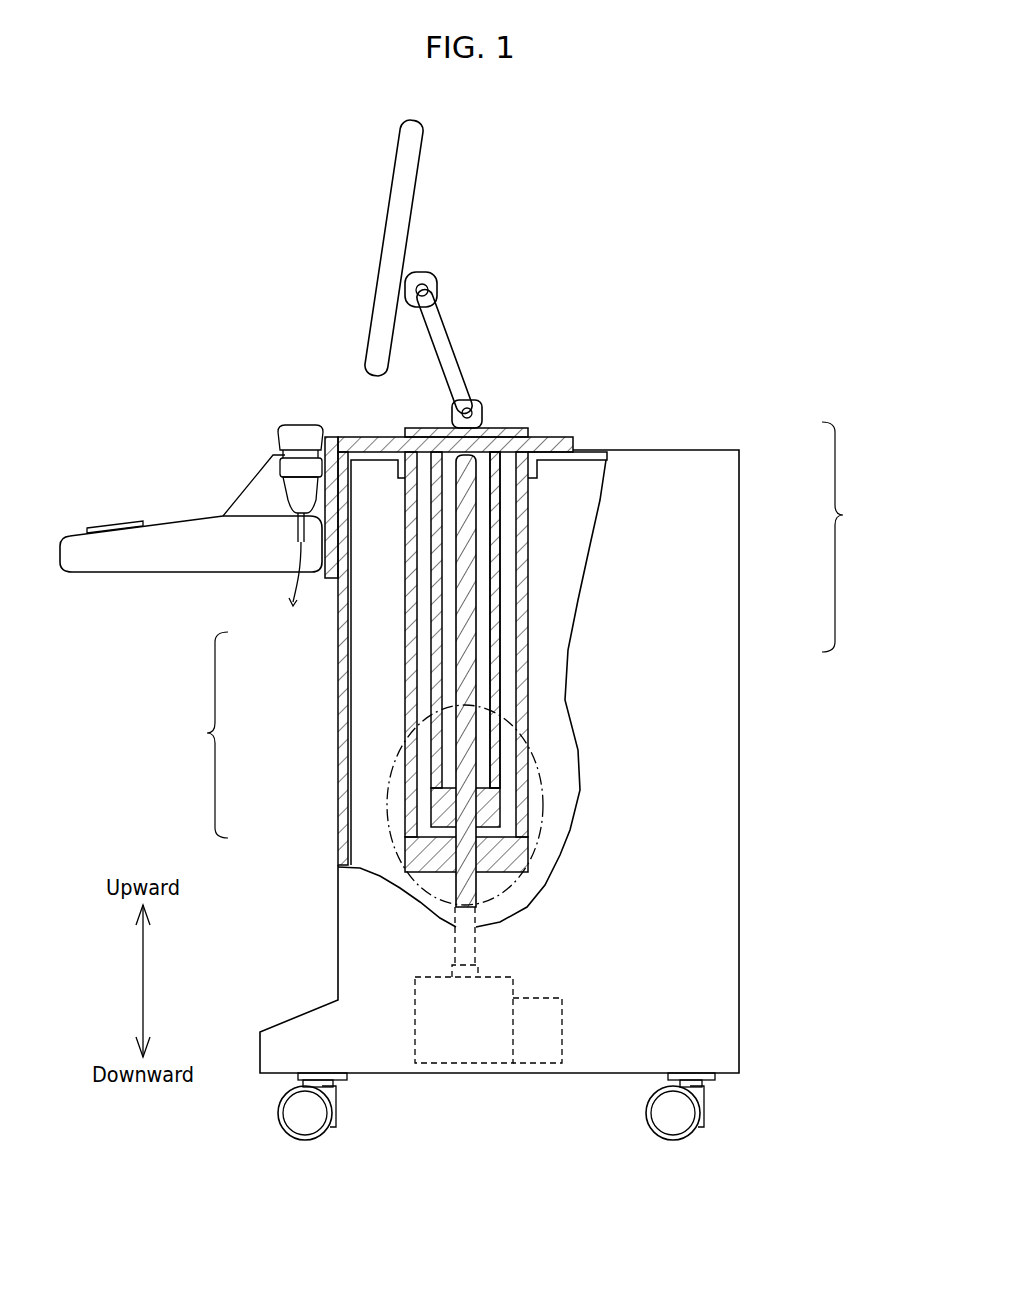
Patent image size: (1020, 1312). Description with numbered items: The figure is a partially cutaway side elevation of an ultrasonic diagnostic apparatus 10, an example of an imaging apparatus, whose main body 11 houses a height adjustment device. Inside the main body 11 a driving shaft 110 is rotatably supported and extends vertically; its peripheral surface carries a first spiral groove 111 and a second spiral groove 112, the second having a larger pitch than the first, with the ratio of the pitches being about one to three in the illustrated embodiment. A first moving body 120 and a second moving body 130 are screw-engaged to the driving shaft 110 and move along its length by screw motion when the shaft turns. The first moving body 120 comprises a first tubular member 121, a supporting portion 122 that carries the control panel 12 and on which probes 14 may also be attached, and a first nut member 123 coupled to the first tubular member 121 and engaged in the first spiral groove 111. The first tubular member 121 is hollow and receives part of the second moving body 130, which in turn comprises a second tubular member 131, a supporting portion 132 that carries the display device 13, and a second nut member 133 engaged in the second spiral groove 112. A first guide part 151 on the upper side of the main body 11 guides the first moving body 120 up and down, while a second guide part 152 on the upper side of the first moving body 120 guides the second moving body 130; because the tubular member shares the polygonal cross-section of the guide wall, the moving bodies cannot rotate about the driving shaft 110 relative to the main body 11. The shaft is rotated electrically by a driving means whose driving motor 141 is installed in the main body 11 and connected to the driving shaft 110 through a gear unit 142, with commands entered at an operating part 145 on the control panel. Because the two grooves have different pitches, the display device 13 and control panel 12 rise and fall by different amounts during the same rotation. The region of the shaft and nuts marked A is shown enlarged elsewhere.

The ultrasonic diagnostic apparatus 10 is at (655, 226).
The main body 11 is at (725, 750).
The control panel 12 is at (198, 522).
The display device 13 is at (382, 247).
The probes 14 is at (293, 430).
The operating part 145 is at (112, 527).
The driving shaft 110 is at (465, 850).
The first spiral groove 111 is at (480, 590).
The second spiral groove 112 is at (480, 562).
The first moving body 120 is at (194, 735).
The first tubular member 121 is at (410, 680).
The supporting portion 122 is at (318, 578).
The first nut member 123 is at (417, 845).
The second moving body 130 is at (855, 537).
The second tubular member 131 is at (497, 510).
The supporting portion 132 is at (530, 433).
The second nut member 133 is at (487, 798).
The driving motor 141 is at (535, 1047).
The gear unit 142 is at (455, 1047).
The first guide part 151 is at (368, 452).
The second guide part 152 is at (410, 453).
The part A is at (410, 885).